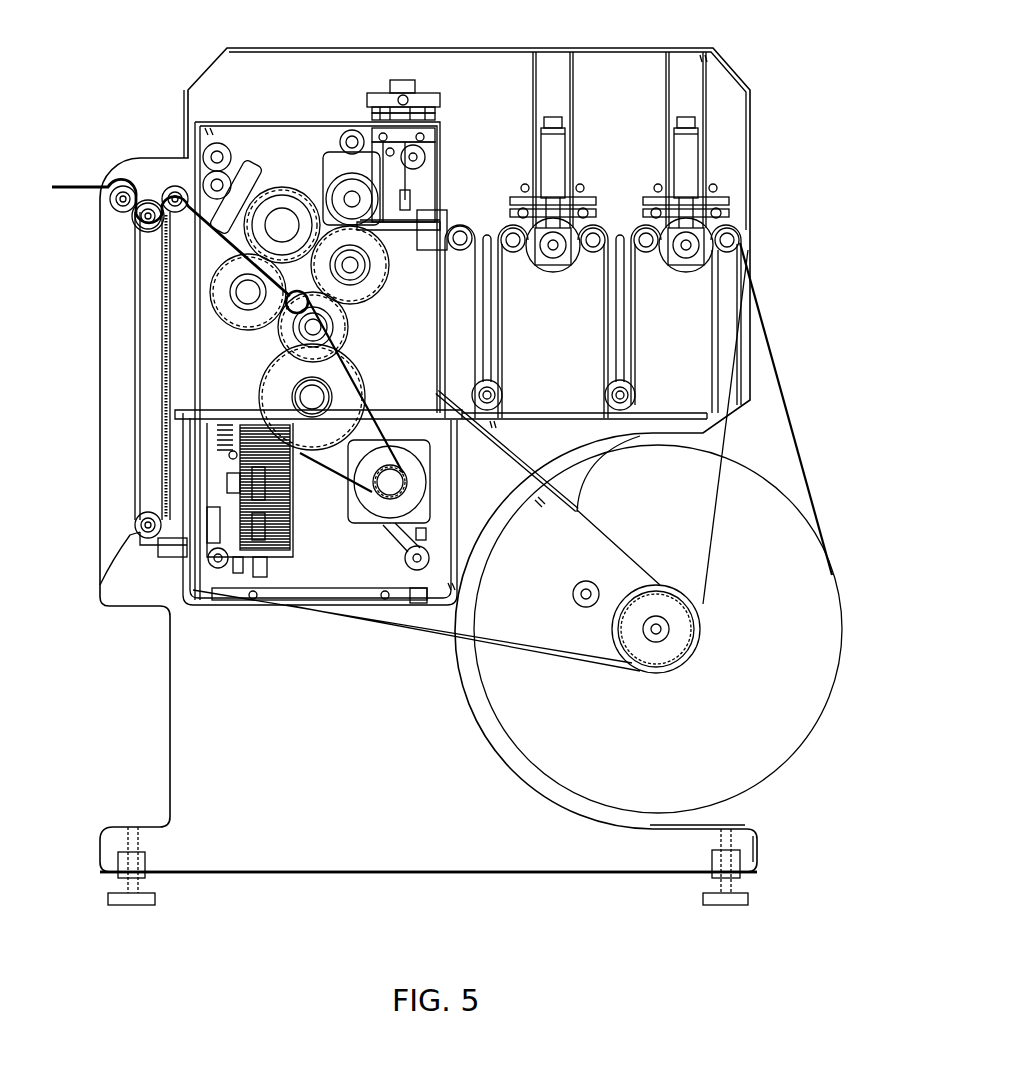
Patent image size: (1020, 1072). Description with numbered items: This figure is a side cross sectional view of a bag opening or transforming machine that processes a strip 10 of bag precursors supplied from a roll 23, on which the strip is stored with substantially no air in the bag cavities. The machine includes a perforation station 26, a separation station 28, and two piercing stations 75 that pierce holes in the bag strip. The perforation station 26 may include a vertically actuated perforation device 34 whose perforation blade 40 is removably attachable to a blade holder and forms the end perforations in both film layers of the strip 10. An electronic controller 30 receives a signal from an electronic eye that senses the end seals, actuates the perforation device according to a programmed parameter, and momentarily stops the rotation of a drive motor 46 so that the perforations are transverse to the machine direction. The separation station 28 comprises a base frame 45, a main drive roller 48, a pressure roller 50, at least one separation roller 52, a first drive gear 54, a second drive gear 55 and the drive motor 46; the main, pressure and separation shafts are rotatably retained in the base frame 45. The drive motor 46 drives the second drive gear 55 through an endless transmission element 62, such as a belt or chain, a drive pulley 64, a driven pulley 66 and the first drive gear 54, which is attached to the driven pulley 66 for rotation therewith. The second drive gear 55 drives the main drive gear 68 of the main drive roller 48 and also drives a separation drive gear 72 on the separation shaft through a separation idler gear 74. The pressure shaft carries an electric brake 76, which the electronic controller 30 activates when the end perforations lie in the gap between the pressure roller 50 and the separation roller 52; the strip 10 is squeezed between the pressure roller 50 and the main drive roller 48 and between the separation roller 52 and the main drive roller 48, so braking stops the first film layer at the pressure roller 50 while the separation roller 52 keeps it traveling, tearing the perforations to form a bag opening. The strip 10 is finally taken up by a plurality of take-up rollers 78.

The strip 10 is at (798, 408).
The roll 23 is at (826, 622).
The perforation station 26 is at (447, 97).
The separation station 28 is at (282, 137).
The electronic controller 30 is at (290, 548).
The vertically actuated perforation device 34 is at (448, 127).
The perforation blade 40 is at (413, 207).
The base frame 45 is at (448, 857).
The drive motor 46 is at (366, 520).
The main drive roller 48 is at (388, 265).
The pressure roller 50 is at (375, 186).
The separation roller 52 is at (278, 178).
The first drive gear 54 is at (350, 372).
The second drive gear 55 is at (246, 347).
The endless transmission element 62 is at (320, 470).
The drive pulley 64 is at (413, 475).
The driven pulley 66 is at (258, 405).
The main drive gear 68 is at (373, 307).
The separation drive gear 72 is at (284, 205).
The separation idler gear 74 is at (210, 278).
The piercing station 75 is at (547, 91).
The electric brake 76 is at (352, 183).
The take-up rollers 78 is at (120, 186).